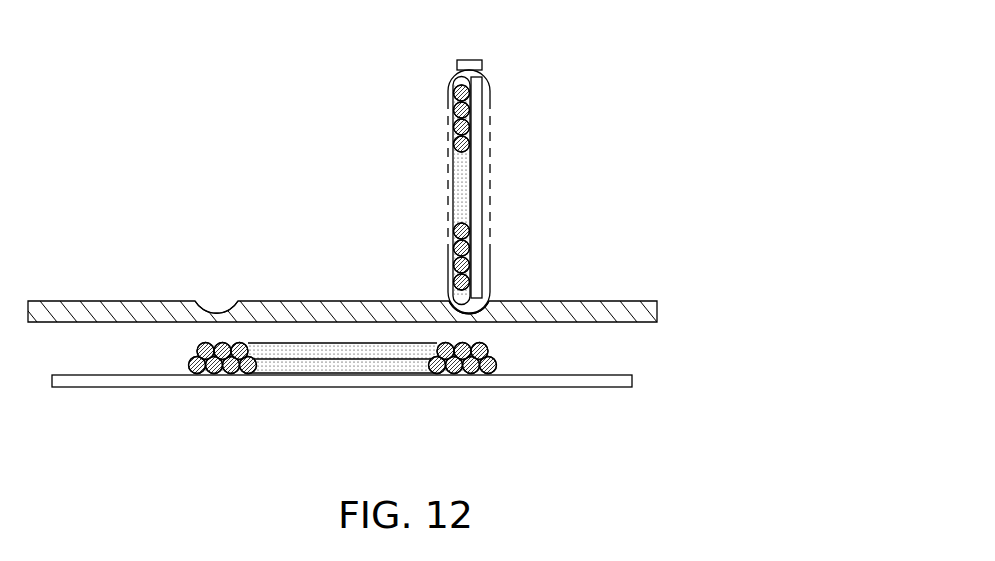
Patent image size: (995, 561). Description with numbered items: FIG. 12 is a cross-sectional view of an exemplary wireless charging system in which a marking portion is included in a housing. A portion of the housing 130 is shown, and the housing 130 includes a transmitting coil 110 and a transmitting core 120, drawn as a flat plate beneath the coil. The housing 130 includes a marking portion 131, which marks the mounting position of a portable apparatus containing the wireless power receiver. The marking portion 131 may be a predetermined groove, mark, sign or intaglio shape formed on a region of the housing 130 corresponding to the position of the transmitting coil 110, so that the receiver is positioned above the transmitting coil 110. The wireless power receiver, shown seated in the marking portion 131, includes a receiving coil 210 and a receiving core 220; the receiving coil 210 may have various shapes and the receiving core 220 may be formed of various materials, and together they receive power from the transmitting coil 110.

The transmitting coil 110 is at (466, 378).
The transmitting core 120 is at (632, 378).
The housing 130 is at (653, 310).
The marking portion 131 is at (227, 309).
The receiving coil 210 is at (460, 106).
The receiving core 220 is at (483, 110).